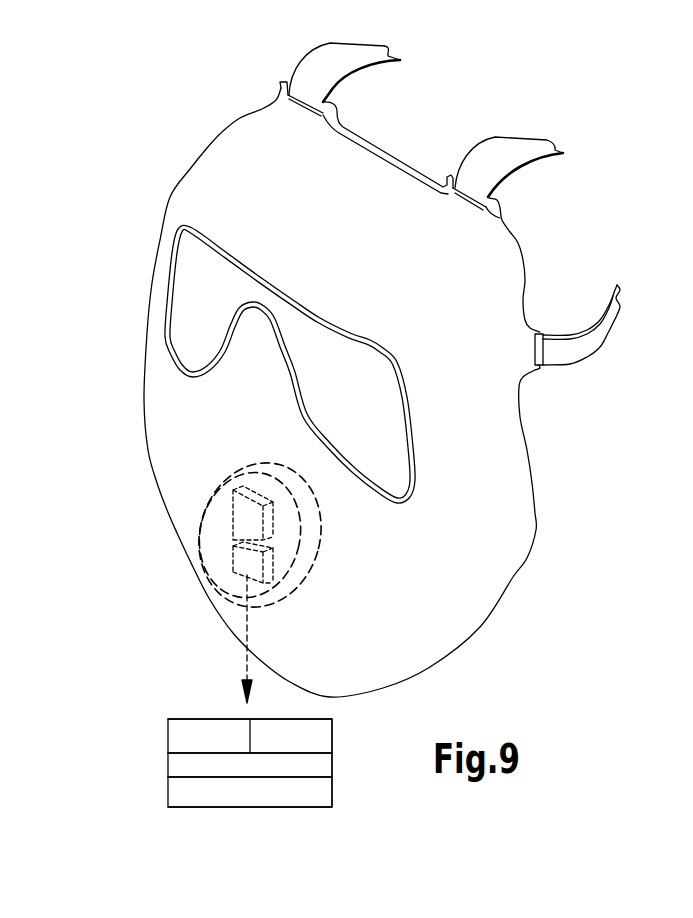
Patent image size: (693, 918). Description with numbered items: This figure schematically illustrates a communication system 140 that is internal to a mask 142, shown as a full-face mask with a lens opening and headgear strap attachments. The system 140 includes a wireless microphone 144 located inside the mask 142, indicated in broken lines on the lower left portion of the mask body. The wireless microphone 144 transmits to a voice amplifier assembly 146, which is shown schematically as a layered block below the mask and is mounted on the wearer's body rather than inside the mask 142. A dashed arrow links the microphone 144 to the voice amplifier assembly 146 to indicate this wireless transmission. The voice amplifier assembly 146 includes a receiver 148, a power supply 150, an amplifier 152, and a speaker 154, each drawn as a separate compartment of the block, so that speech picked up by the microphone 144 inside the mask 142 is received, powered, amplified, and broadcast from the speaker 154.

The communication system 140 is at (152, 598).
The mask 142 is at (537, 502).
The wireless microphone 144 is at (245, 517).
The voice amplifier assembly 146 is at (366, 826).
The receiver 148 is at (185, 733).
The power supply 150 is at (323, 735).
The amplifier 152 is at (178, 763).
The speaker 154 is at (218, 795).